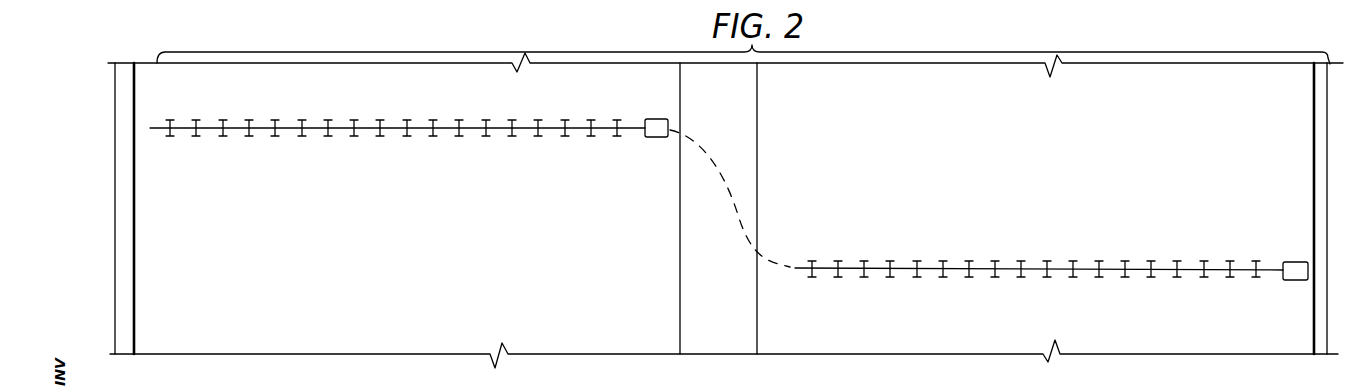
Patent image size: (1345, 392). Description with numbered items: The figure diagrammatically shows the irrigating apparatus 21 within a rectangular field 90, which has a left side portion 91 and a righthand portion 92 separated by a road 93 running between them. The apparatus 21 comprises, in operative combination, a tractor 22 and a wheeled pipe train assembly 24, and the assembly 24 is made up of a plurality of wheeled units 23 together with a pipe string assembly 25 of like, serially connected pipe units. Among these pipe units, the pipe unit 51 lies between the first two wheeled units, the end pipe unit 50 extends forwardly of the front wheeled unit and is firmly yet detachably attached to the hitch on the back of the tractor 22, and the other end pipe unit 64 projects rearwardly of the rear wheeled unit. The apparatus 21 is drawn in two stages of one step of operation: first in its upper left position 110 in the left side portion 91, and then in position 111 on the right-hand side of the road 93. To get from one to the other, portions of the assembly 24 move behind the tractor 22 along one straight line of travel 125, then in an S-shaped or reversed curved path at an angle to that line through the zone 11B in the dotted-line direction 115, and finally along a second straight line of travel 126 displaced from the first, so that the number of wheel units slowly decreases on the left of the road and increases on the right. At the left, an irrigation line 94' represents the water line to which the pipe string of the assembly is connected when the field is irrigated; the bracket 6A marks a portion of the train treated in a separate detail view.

The field 90 is at (113, 172).
The irrigation line 94' is at (161, 208).
The left side portion 91 is at (437, 292).
The righthand portion 92 is at (1101, 158).
The zone 11B is at (693, 304).
The wheeled pipe train assembly 24 is at (516, 160).
The pipe string assembly 25 is at (174, 132).
The wheeled units 23 is at (488, 136).
The pipe unit 51 is at (607, 131).
The end pipe unit 50 is at (638, 132).
The tractor 22 is at (655, 137).
The position 110 is at (673, 100).
The conveyor assembly 6A is at (463, 194).
The apparatus 21 is at (1330, 299).
The direction of travel 115 is at (727, 174).
The road 93 is at (762, 236).
The straight line of travel 125 is at (769, 130).
The second line of travel 126 is at (774, 267).
The end pipe unit 64 is at (800, 266).
The position 111 is at (1032, 265).